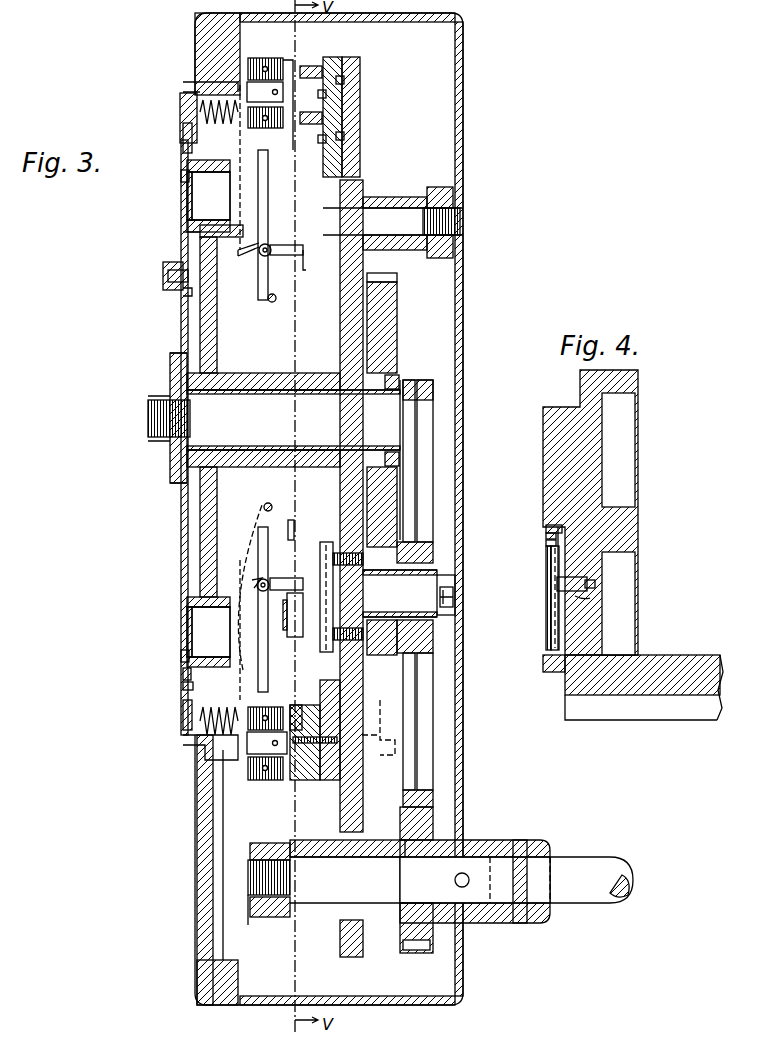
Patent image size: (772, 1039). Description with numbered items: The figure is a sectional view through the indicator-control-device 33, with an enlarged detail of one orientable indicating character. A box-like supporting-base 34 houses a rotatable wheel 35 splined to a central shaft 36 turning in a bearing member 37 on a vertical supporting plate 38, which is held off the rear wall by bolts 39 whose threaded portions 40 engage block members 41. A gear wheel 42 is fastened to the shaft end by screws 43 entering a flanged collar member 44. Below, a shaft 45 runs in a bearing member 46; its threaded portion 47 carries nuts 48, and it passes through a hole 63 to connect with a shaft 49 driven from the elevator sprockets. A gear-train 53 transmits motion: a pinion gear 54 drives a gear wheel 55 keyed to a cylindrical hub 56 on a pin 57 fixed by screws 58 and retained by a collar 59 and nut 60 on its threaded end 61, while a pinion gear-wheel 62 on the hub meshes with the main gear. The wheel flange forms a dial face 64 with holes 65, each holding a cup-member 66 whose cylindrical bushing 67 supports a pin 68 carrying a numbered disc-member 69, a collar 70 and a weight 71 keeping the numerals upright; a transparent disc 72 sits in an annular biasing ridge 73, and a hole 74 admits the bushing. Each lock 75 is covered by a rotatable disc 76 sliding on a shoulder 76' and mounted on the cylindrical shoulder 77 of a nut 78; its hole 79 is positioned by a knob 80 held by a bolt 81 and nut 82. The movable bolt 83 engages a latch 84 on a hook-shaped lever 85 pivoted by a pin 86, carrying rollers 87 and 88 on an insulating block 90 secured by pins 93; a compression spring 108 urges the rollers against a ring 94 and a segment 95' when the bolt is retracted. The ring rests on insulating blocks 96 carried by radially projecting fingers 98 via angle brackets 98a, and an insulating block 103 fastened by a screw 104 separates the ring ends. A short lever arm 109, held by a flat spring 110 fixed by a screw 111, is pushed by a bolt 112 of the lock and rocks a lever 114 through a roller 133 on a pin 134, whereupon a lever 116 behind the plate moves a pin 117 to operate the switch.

In FIG. 3, the indicator-control-device 33 is at (503, 37).
In FIG. 3, the supporting-base 34 is at (400, 996).
In FIG. 3, the rotatable wheel 35 is at (200, 313).
In FIG. 4, the rotatable wheel 35 is at (672, 660).
In FIG. 3, the shaft 36 is at (148, 428).
In FIG. 3, the bearing member 37 is at (265, 388).
In FIG. 3, the supporting plate 38 is at (363, 270).
In FIG. 3, the bolts 39 is at (390, 205).
In FIG. 3, the threaded portions 40 is at (462, 222).
In FIG. 3, the block members 41 is at (440, 187).
In FIG. 3, the gear wheel 42 is at (397, 300).
In FIG. 3, the screws 43 is at (398, 378).
In FIG. 3, the flanged collar member 44 is at (400, 360).
In FIG. 3, the shaft 45 is at (520, 882).
In FIG. 3, the bearing member 46 is at (357, 840).
In FIG. 3, the threaded portion 47 is at (250, 910).
In FIG. 3, the nuts 48 is at (275, 843).
In FIG. 3, the shaft 49 is at (630, 885).
In FIG. 3, the gear-train 53 is at (454, 539).
In FIG. 3, the pinion gear 54 is at (440, 808).
In FIG. 3, the gear wheel 55 is at (432, 476).
In FIG. 3, the cylindrical hub 56 is at (437, 568).
In FIG. 3, the pin 57 is at (433, 612).
In FIG. 3, the screws 58 is at (322, 545).
In FIG. 3, the collar 59 is at (440, 576).
In FIG. 3, the nut 60 is at (453, 603).
In FIG. 3, the threaded end 61 is at (455, 598).
In FIG. 3, the pinion gear-wheel 62 is at (385, 630).
In FIG. 3, the hole 63 is at (450, 840).
In FIG. 3, the dial face 64 is at (180, 113).
In FIG. 4, the dial face 64 is at (543, 412).
In FIG. 4, the holes 65 is at (558, 535).
In FIG. 3, the cup-member 66 is at (183, 135).
In FIG. 4, the cup-member 66 is at (553, 533).
In FIG. 4, the cylindrical bushing 67 is at (553, 570).
In FIG. 4, the pin 68 is at (592, 582).
In FIG. 3, the disc-member 69 is at (185, 688).
In FIG. 4, the disc-member 69 is at (548, 540).
In FIG. 4, the collar 70 is at (598, 575).
In FIG. 4, the weight 71 is at (548, 655).
In FIG. 3, the disc 72 is at (183, 672).
In FIG. 4, the disc 72 is at (548, 620).
In FIG. 4, the annular biasing ridge 73 is at (550, 527).
In FIG. 4, the hole 74 is at (590, 606).
In FIG. 3, the lock 75 is at (187, 210).
In FIG. 3, the disc 76 is at (163, 437).
In FIG. 3, the shoulder 76' is at (159, 413).
In FIG. 3, the cylindrical shoulder 77 is at (172, 375).
In FIG. 3, the nut 78 is at (170, 393).
In FIG. 3, the hole 79 is at (183, 232).
In FIG. 3, the knob 80 is at (163, 280).
In FIG. 3, the bolt 81 is at (165, 268).
In FIG. 3, the nut 82 is at (183, 292).
In FIG. 3, the movable bolt 83 is at (230, 195).
In FIG. 3, the latch 84 is at (225, 172).
In FIG. 3, the lever 85 is at (270, 212).
In FIG. 3, the pin 86 is at (272, 248).
In FIG. 3, the roller 87 is at (262, 57).
In FIG. 3, the roller 88 is at (310, 128).
In FIG. 3, the insulating block 90 is at (318, 94).
In FIG. 3, the pins 93 is at (265, 92).
In FIG. 3, the ring 94 is at (310, 65).
In FIG. 3, the segment 95' is at (371, 115).
In FIG. 3, the insulating blocks 96 is at (335, 58).
In FIG. 3, the radially projecting fingers 98 is at (352, 62).
In FIG. 3, the angle brackets 98a is at (345, 82).
In FIG. 3, the insulating block 103 is at (298, 780).
In FIG. 3, the screw 104 is at (290, 707).
In FIG. 3, the compression spring 108 is at (185, 88).
In FIG. 3, the short lever arm 109 is at (300, 270).
In FIG. 3, the flat spring 110 is at (277, 290).
In FIG. 3, the screw 111 is at (278, 306).
In FIG. 3, the bolt 112 is at (258, 584).
In FIG. 3, the lever 114 is at (285, 650).
In FIG. 3, the lever 116 is at (380, 705).
In FIG. 3, the pin 117 is at (380, 755).
In FIG. 3, the roller 133 is at (296, 637).
In FIG. 3, the pin 134 is at (252, 580).